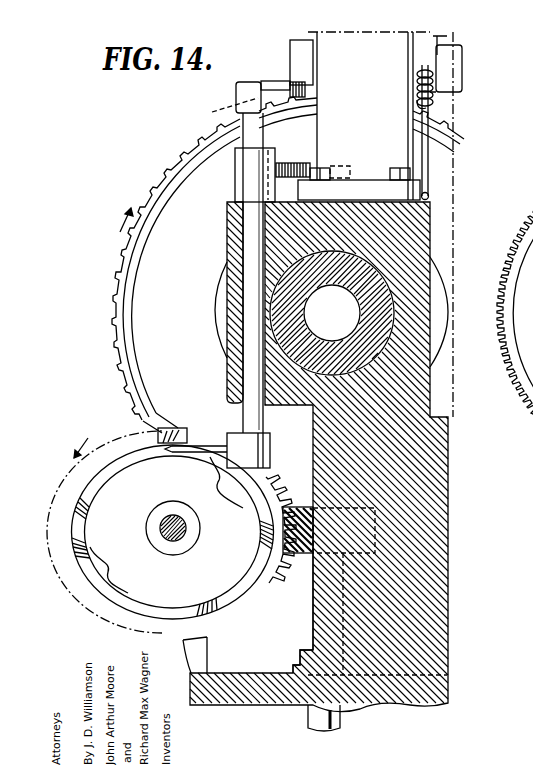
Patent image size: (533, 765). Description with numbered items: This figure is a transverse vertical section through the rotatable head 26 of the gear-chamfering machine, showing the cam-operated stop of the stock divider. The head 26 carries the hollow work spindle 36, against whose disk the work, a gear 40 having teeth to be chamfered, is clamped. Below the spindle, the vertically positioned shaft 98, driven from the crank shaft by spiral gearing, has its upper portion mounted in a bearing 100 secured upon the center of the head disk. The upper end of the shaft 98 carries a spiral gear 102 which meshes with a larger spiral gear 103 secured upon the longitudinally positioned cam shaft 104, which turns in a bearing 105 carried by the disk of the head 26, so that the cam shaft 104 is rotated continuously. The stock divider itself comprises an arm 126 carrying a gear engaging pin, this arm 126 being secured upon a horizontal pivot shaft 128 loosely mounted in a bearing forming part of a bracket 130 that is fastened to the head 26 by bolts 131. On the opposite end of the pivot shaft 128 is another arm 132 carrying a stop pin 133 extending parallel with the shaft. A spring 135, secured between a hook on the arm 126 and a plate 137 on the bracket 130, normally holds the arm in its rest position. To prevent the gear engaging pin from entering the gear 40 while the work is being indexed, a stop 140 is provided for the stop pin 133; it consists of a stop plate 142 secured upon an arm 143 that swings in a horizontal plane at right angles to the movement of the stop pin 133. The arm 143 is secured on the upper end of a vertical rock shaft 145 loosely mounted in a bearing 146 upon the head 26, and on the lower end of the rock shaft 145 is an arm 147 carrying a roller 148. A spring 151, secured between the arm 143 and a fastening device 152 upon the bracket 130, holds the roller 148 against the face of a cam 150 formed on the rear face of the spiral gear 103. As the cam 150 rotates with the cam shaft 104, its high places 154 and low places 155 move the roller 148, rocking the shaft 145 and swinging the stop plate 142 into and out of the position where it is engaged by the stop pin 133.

The head 26 is at (449, 590).
The work spindle 36 is at (330, 338).
The gear 40 is at (190, 186).
The vertically positioned shaft 98 is at (313, 618).
The bearing 100 is at (304, 660).
The spiral gear 102 is at (305, 503).
The spiral gear 103 is at (275, 580).
The cam shaft 104 is at (160, 521).
The bearing 105 is at (206, 652).
The arm 126 is at (447, 38).
The pivot shaft 128 is at (466, 64).
The bracket 130 is at (428, 116).
The bolts 131 is at (420, 176).
The arm 132 is at (291, 64).
The stop pin 133 is at (291, 83).
The spring 135 is at (438, 97).
The plate 137 is at (458, 128).
The stop 140 is at (236, 90).
The stop plate 142 is at (220, 110).
The arm 143 is at (240, 150).
The rock shaft 145 is at (247, 240).
The bearing 146 is at (228, 213).
The arm 147 is at (203, 430).
The roller 148 is at (150, 424).
The cam 150 is at (118, 447).
The spring 151 is at (293, 163).
The fastening device 152 is at (342, 172).
The high places 154 is at (166, 525).
The low places 155 is at (114, 461).